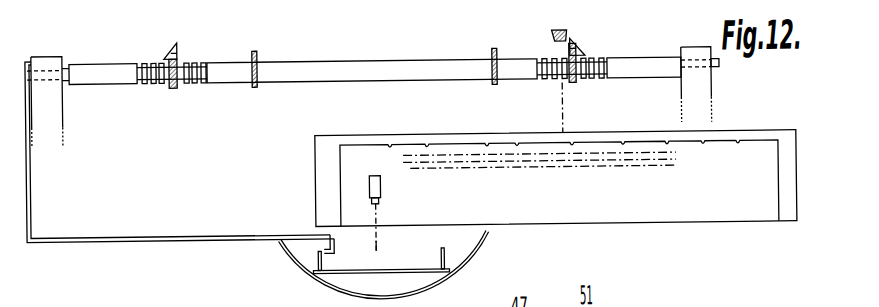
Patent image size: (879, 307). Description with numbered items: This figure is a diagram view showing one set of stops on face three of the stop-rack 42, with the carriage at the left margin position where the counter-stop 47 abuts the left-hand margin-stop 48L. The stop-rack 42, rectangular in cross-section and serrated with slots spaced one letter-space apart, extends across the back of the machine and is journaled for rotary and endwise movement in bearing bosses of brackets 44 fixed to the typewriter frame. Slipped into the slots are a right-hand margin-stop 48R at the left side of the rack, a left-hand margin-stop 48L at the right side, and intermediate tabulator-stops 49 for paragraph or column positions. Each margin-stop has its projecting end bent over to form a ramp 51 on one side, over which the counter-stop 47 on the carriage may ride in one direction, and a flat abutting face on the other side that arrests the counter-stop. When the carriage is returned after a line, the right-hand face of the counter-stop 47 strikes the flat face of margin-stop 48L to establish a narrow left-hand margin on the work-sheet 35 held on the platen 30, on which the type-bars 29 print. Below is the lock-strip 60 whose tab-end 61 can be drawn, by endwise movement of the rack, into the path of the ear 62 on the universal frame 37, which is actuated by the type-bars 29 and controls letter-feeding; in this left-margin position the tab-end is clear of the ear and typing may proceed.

The bracket 44 is at (45, 102).
The lock-strip 60 is at (88, 243).
The tab-end 61 is at (326, 258).
The stop-rack 42 is at (153, 85).
The cam portion or ramp 51 is at (167, 52).
The right-hand margin-stop 48R is at (168, 47).
The left-hand margin-stop 48L is at (594, 36).
The tabulator-stop 49 is at (256, 50).
The counter-stop 47 is at (553, 33).
The platen 30 is at (390, 134).
The work-sheet 35 is at (340, 182).
The type-bar 29 is at (381, 247).
The ear 62 is at (320, 252).
The universal frame 37 is at (342, 272).